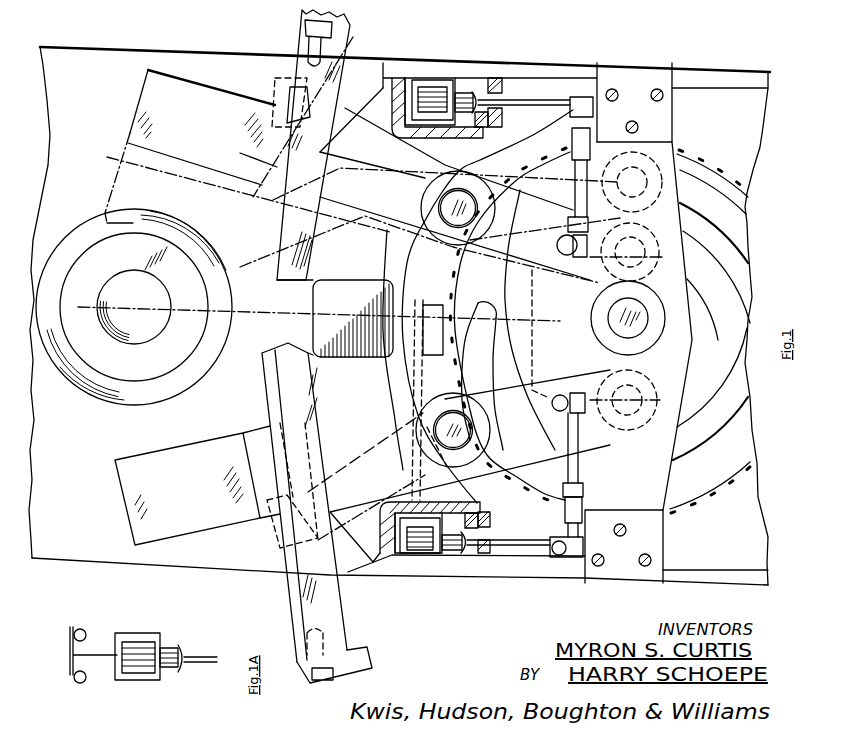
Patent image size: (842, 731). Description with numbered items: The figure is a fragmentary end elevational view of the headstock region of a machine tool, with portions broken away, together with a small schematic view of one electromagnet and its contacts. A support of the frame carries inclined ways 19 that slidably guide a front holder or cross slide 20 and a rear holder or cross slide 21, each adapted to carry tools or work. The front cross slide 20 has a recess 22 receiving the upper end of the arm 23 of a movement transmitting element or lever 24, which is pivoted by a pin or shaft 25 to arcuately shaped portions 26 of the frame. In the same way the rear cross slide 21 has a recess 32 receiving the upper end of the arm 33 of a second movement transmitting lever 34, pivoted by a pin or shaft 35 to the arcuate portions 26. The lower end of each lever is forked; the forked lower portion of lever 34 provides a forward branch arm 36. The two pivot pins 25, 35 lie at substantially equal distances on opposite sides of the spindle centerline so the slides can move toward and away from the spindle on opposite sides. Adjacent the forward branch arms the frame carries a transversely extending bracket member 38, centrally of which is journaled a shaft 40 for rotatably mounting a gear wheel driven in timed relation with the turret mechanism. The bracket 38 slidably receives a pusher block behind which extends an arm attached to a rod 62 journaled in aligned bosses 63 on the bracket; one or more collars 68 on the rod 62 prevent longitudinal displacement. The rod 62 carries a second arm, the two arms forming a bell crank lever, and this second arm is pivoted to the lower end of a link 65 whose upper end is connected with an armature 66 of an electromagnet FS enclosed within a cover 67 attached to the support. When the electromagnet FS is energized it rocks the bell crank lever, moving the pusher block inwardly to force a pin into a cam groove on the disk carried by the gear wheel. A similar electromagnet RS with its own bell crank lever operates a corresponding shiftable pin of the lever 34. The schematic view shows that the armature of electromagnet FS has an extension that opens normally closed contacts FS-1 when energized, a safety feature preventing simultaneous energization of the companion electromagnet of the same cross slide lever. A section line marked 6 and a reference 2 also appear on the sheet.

In FIG. 1, the wheel / gear 2 is at (77, 307).
In FIG. 1, the section line 6- 6 is at (624, 612).
In FIG. 1, the inclined ways 19 is at (273, 383).
In FIG. 1, the front holder or cross slide 20 is at (292, 588).
In FIG. 1, the rear holder or cross slide 21 is at (297, 50).
In FIG. 1, the recess 22 is at (266, 545).
In FIG. 1, the arm 23 is at (357, 428).
In FIG. 1, the movement transmitting element or lever 24 is at (378, 404).
In FIG. 1, the pin or shaft 25 is at (467, 423).
In FIG. 1, the arcuately shaped portions 26 is at (403, 368).
In FIG. 1, the recess 32 is at (282, 96).
In FIG. 1, the arm 33 is at (397, 238).
In FIG. 1, the movement transmitting element or lever 34 is at (502, 273).
In FIG. 1, the pin or shaft 35 is at (438, 205).
In FIG. 1, the branch arm 36 is at (574, 272).
In FIG. 1, the bracket member 38 is at (673, 110).
In FIG. 1, the shaft 40 is at (608, 322).
In FIG. 1, the rod 62 is at (583, 458).
In FIG. 1, the bosses 63 is at (562, 410).
In FIG. 1, the link 65 is at (445, 312).
In FIG. 1, the armature 66 is at (462, 556).
In FIG. 1, the cover 67 is at (387, 560).
In FIG. 1, the collars 68 is at (560, 494).
In FIG. 1, the electromagnet RS is at (432, 87).
In FIG. 1, the electromagnet FS is at (420, 555).
In FIG. 1A, the electromagnet FS is at (142, 642).
In FIG. 1A, the normally closed contacts FS-1 is at (74, 630).